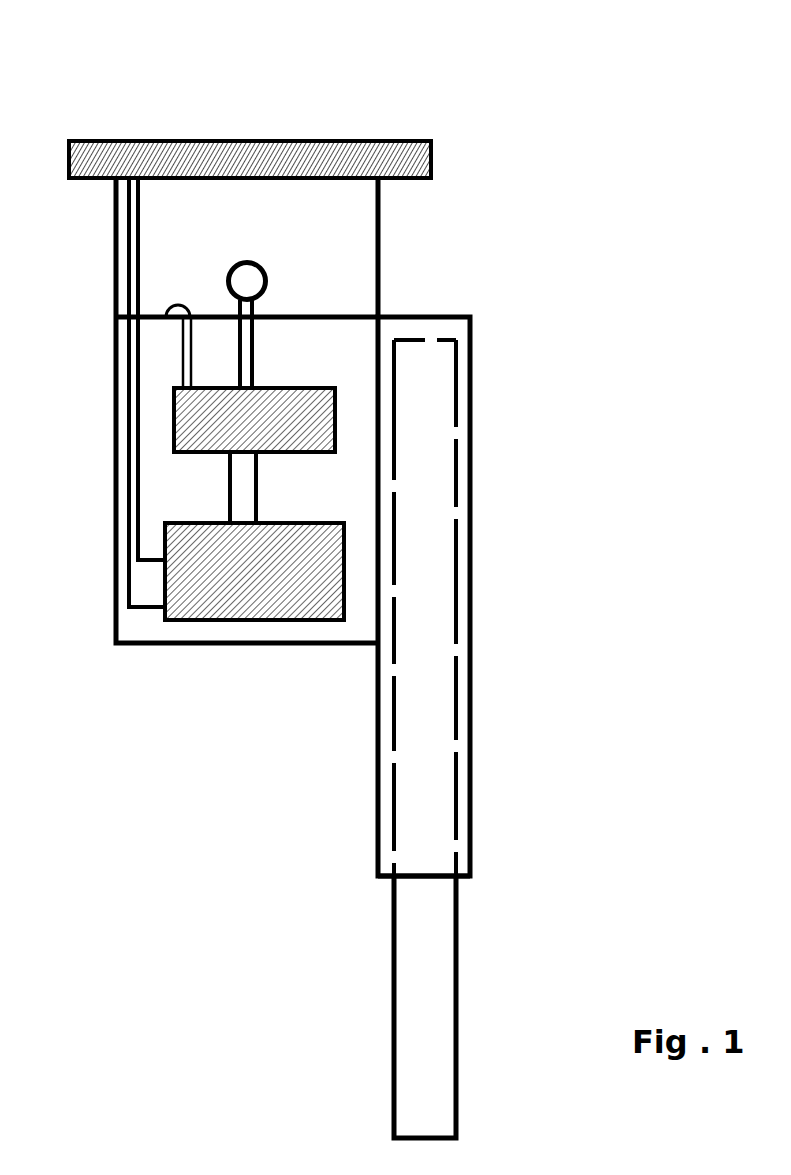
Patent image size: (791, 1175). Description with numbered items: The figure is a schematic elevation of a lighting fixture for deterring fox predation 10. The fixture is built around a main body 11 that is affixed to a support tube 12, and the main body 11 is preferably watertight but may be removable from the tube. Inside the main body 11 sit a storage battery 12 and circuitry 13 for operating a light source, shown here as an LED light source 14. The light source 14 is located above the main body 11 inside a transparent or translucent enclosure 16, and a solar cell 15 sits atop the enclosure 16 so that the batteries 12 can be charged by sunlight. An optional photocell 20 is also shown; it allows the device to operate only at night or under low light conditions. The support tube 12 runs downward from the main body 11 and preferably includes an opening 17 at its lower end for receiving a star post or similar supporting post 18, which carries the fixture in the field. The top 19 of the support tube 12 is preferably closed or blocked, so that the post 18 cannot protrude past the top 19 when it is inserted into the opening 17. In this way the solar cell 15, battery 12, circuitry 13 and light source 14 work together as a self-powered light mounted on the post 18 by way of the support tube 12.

The lighting fixture for deterring fox predation 10 is at (622, 86).
The main body 11 is at (160, 643).
The support tube 12 is at (262, 597).
The circuitry 13 is at (174, 410).
The LED light source 14 is at (268, 280).
The solar cell 15 is at (392, 140).
The enclosure 16 is at (380, 212).
The opening 17 is at (462, 878).
The supporting post 18 is at (418, 970).
The top of the support tube 19 is at (445, 312).
The photocell 20 is at (180, 305).